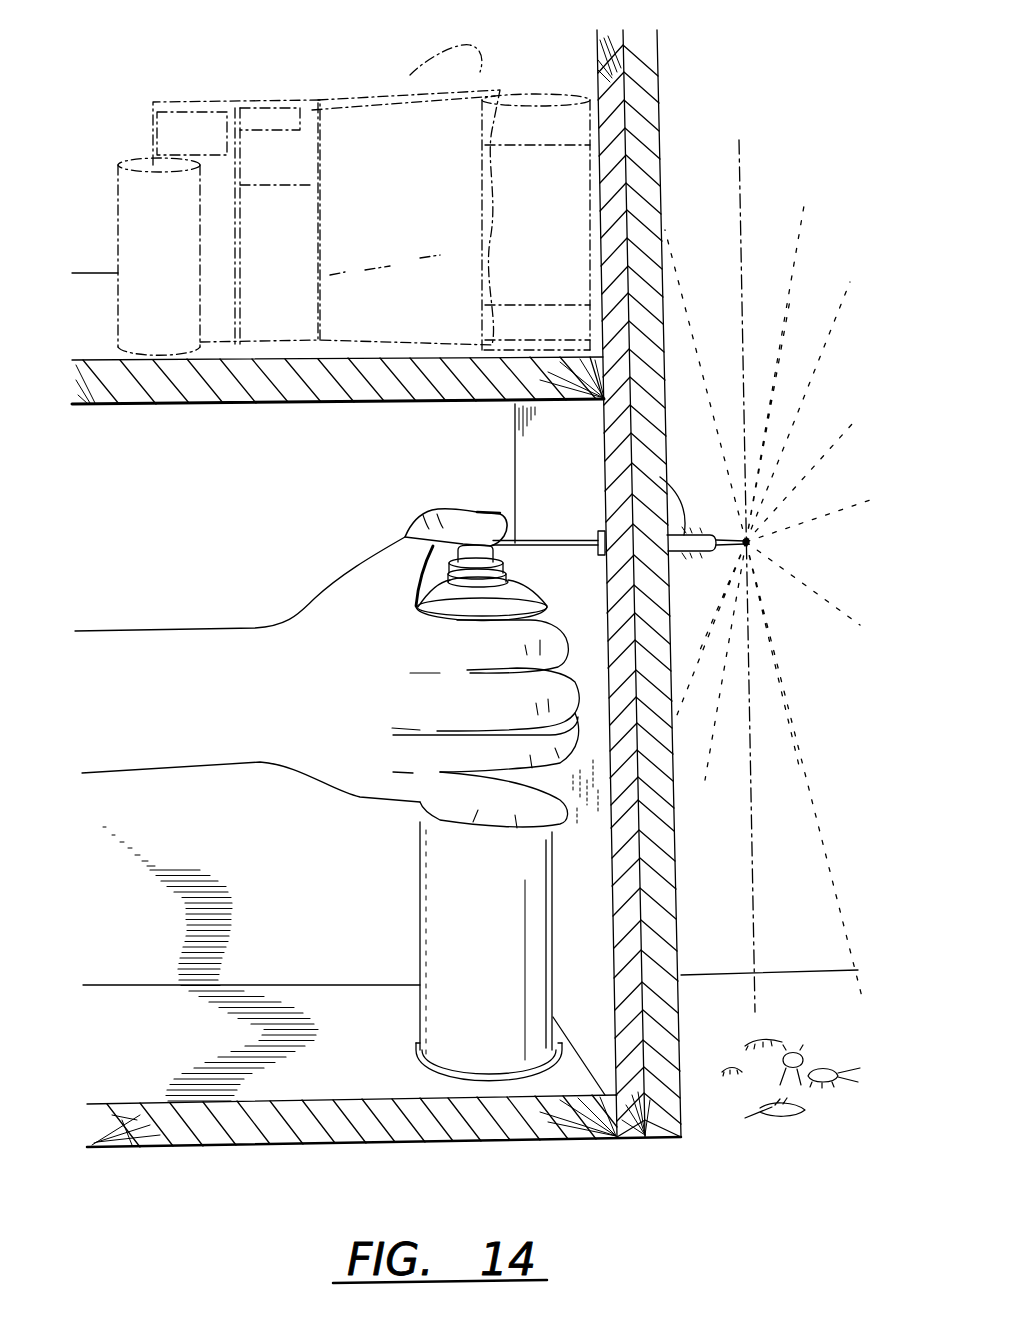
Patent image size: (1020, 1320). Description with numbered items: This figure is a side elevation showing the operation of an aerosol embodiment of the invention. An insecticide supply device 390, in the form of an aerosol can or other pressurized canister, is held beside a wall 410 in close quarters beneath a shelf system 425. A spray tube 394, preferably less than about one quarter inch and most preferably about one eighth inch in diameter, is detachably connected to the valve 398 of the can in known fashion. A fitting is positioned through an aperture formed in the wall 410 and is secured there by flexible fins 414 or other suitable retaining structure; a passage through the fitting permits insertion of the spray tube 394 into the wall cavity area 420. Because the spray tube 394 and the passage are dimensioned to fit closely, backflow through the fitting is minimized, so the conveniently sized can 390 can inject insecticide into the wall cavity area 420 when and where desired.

The insecticide supply device 390 is at (420, 918).
The spray tube 394 is at (535, 540).
The valve 398 is at (405, 537).
The wall 410 is at (665, 810).
The flexible fins 414 is at (660, 477).
The wall cavity area 420 is at (703, 347).
The shelf system 425 is at (245, 404).